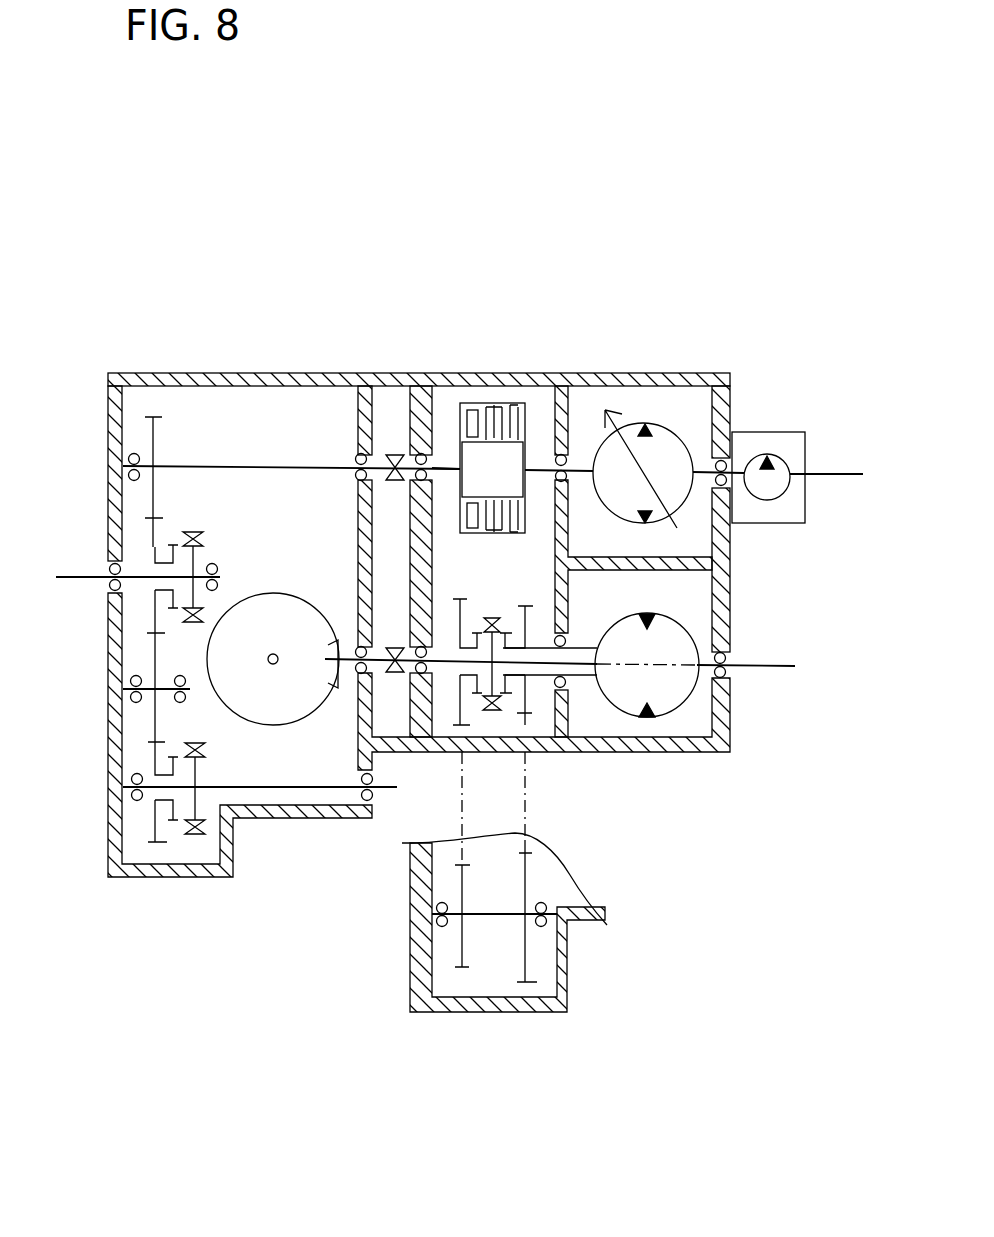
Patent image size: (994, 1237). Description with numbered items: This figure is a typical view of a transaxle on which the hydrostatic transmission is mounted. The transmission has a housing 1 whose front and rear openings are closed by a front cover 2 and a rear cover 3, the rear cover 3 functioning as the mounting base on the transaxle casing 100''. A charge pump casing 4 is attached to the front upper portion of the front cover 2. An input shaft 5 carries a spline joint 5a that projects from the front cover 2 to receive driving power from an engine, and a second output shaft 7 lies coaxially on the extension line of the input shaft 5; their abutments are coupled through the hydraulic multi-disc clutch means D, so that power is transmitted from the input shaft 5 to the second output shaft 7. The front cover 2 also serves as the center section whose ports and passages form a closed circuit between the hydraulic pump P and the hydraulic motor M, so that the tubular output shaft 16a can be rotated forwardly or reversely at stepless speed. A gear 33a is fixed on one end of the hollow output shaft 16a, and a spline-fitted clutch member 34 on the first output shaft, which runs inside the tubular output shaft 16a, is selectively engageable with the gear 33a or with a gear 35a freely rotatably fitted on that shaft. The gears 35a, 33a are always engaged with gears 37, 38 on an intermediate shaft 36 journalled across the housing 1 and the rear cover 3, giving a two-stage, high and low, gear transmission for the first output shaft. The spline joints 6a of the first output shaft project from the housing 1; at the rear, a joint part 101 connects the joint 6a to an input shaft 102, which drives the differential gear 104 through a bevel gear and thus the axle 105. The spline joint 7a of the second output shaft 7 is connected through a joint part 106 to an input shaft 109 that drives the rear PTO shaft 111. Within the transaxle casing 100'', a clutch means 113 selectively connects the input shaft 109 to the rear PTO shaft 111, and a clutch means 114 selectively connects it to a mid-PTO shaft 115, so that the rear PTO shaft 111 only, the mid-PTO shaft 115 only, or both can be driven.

The housing 1 is at (545, 372).
The front cover 2 is at (727, 374).
The rear cover 3 is at (420, 453).
The charge pump casing 4 is at (780, 431).
The input shaft 5 is at (582, 460).
The spline joint 5a is at (842, 468).
The spline joint 6a is at (397, 673).
The second output shaft 7 is at (440, 460).
The spline joint 7a is at (395, 455).
The tubular output shaft 16a is at (580, 675).
The gear 33a is at (522, 606).
The clutch member 34 is at (498, 712).
The gear 35a is at (455, 599).
The intermediate shaft 36 is at (502, 913).
The gear 37 is at (557, 958).
The gear 38 is at (465, 948).
The transaxle casing 100'' is at (236, 662).
The joint part 101 is at (390, 673).
The input shaft 102 is at (340, 638).
The differential gear 104 is at (284, 747).
The axle 105 is at (273, 653).
The joint part 106 is at (388, 456).
The input shaft 109 is at (257, 467).
The rear PTO shaft 111 is at (78, 572).
The clutch means 113 is at (183, 503).
The clutch means 114 is at (138, 758).
The mid-PTO shaft 115 is at (337, 783).
The clutch means D is at (494, 403).
The hydraulic pump P is at (647, 424).
The hydraulic motor M is at (686, 642).